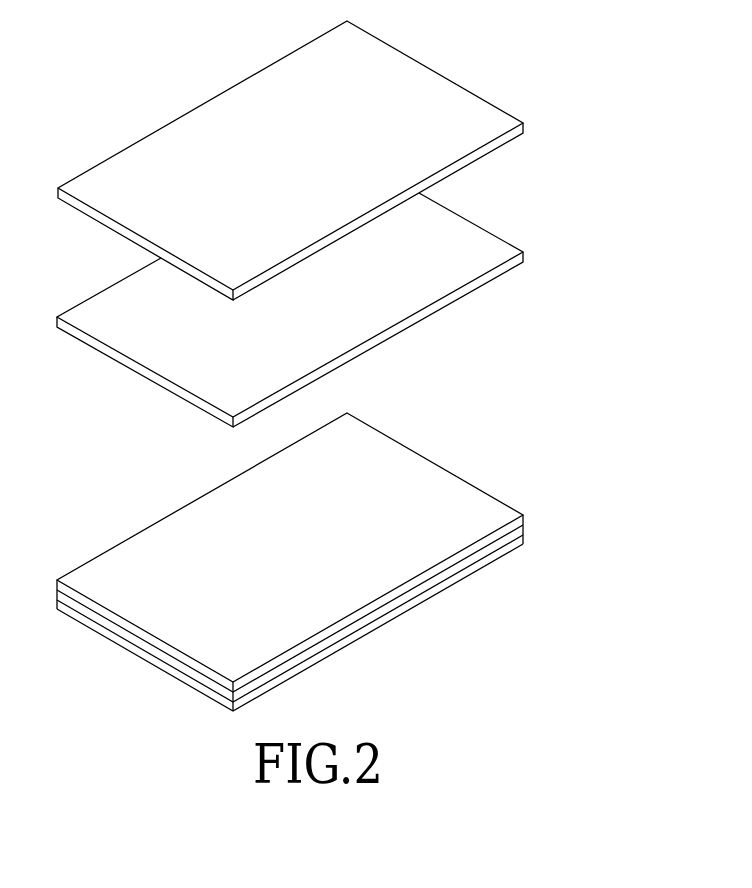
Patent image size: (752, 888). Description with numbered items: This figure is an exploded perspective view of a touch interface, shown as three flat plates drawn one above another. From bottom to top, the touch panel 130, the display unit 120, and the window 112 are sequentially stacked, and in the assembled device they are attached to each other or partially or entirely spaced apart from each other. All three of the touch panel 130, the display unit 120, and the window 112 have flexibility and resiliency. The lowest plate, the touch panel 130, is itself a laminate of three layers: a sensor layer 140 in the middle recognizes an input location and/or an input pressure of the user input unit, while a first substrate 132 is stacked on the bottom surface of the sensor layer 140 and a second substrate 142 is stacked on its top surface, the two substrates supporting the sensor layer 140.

The window 112 is at (522, 92).
The display unit 120 is at (520, 218).
The touch panel 130 is at (343, 562).
The second substrate 142 is at (525, 512).
The sensor layer 140 is at (525, 525).
The first substrate 132 is at (525, 540).